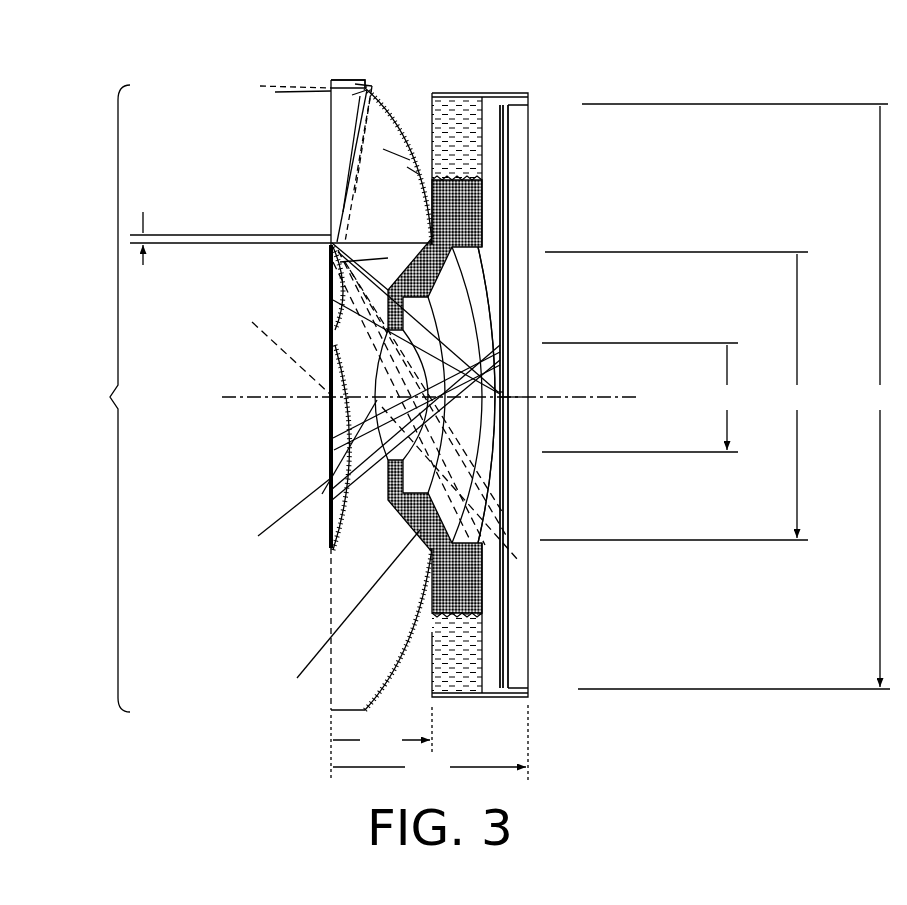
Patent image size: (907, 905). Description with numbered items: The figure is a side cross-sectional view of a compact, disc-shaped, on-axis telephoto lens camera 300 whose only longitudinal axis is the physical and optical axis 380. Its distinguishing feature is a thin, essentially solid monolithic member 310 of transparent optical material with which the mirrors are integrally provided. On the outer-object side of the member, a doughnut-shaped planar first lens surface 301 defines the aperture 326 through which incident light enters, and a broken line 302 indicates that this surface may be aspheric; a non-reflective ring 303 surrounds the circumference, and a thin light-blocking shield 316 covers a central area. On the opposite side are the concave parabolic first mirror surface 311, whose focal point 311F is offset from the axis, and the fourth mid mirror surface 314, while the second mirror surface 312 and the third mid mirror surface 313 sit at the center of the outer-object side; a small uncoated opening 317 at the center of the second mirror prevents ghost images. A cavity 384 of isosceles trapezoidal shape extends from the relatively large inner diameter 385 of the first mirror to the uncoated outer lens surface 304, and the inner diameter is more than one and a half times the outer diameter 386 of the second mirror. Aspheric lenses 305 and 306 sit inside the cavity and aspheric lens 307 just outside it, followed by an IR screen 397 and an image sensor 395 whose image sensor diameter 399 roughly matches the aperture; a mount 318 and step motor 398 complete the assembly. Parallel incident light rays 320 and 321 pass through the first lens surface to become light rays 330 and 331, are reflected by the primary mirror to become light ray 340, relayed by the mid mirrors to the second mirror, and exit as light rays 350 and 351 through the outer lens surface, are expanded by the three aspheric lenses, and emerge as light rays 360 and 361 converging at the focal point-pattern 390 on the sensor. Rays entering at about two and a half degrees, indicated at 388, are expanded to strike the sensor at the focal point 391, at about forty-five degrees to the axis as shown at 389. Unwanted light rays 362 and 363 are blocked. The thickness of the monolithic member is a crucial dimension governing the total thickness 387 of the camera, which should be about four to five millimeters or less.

The on-axis telephoto lens camera 300 is at (660, 90).
The first lens surface 301 is at (290, 164).
The broken line 302 is at (339, 395).
The non-reflective ring 303 is at (399, 61).
The outer lens surface 304 is at (554, 395).
The aspheric lens 305 is at (550, 407).
The aspheric lens 306 is at (556, 403).
The aspheric lens 307 is at (579, 395).
The monolithic member 310 is at (333, 167).
The first mirror surface 311 is at (326, 183).
The focal point of first mirror surface 311F is at (321, 401).
The second mirror surface 312 is at (284, 396).
The third mid mirror surface 313 is at (318, 266).
The fourth mid mirror surface 314 is at (322, 288).
The shield 316 is at (282, 488).
The opening 317 is at (309, 440).
The mount 318 is at (542, 391).
The incident light ray 320 is at (248, 103).
The incident light ray 321 is at (281, 257).
The aperture 326 is at (96, 398).
The light ray 330 is at (313, 100).
The light ray 331 is at (327, 262).
The light ray 340 is at (311, 165).
The light ray 350 is at (365, 419).
The light ray 351 is at (370, 433).
The light ray 360 is at (518, 322).
The light ray 361 is at (509, 347).
The unwanted light ray 362 is at (238, 507).
The unwanted light ray 363 is at (303, 614).
The optical axis 380 is at (394, 415).
The cavity 384 is at (595, 345).
The inner diameter 385 is at (676, 396).
The outer diameter of second mirror surface 386 is at (645, 397).
The total thickness 387 is at (430, 742).
The incidence angle 388 is at (151, 226).
The angle to central axis 389 is at (240, 393).
The focal point-pattern 390 is at (593, 416).
The focal point 391 is at (532, 527).
The image sensor 395 is at (588, 396).
The IR screen 397 is at (594, 396).
The step motor 398 is at (556, 395).
The image sensor diameter 399 is at (736, 396).